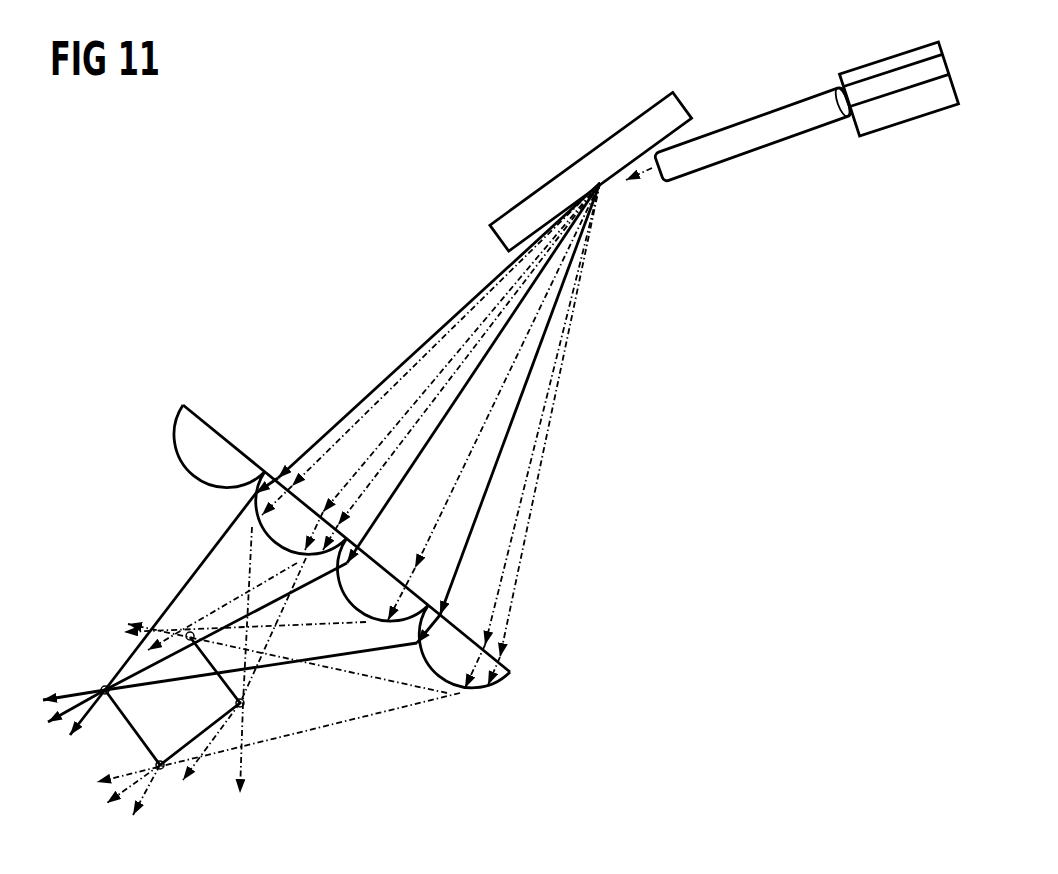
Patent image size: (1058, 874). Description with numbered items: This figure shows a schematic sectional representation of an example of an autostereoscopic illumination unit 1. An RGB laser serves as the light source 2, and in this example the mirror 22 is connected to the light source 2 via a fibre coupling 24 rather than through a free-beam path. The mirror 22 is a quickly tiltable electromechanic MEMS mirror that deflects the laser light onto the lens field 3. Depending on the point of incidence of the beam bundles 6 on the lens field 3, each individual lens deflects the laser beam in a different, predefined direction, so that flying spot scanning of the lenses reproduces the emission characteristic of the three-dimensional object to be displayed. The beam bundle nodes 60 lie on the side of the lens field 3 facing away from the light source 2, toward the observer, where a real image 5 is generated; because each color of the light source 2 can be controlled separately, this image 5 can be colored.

The optical scanning arrangement 1 is at (830, 414).
The light source 2 is at (912, 127).
The mirror 22 is at (570, 165).
The fibre coupling 24 is at (737, 146).
The lens field 3 is at (173, 468).
The beam bundles 6 is at (385, 380).
The beam bundle nodes 60 is at (103, 683).
The real image 5 is at (128, 728).